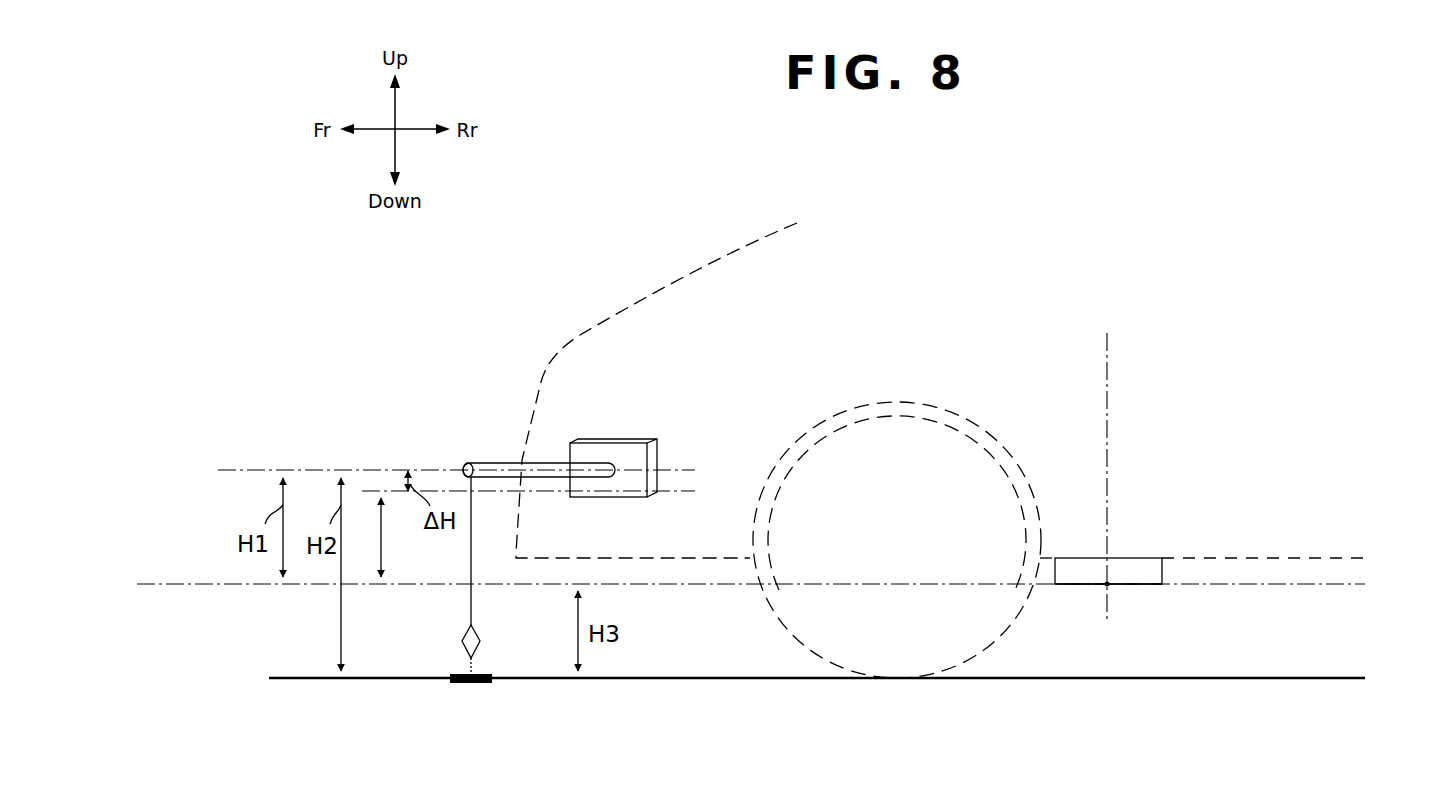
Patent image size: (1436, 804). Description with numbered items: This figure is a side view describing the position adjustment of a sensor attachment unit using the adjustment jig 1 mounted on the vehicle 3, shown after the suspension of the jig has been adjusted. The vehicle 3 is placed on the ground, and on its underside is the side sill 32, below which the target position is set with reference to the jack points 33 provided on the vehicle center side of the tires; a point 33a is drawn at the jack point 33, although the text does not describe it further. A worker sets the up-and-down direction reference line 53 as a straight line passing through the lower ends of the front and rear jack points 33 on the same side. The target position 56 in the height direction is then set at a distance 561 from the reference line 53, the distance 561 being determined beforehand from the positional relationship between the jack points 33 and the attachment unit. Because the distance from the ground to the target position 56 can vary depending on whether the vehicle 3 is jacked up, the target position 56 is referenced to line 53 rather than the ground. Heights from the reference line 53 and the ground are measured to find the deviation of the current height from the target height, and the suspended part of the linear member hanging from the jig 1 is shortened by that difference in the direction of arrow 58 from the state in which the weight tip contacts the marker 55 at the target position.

The adjustment jig 1 is at (627, 439).
The vehicle 3 is at (620, 313).
The side sill 32 is at (1072, 558).
The jack points 33 is at (1080, 585).
The reference point 33a is at (1107, 584).
The up-and-down direction reference line 53 is at (160, 583).
The marker 55 is at (470, 684).
The target position in height direction 56 is at (367, 490).
The distance 561 is at (386, 560).
The arrow 58 is at (477, 664).